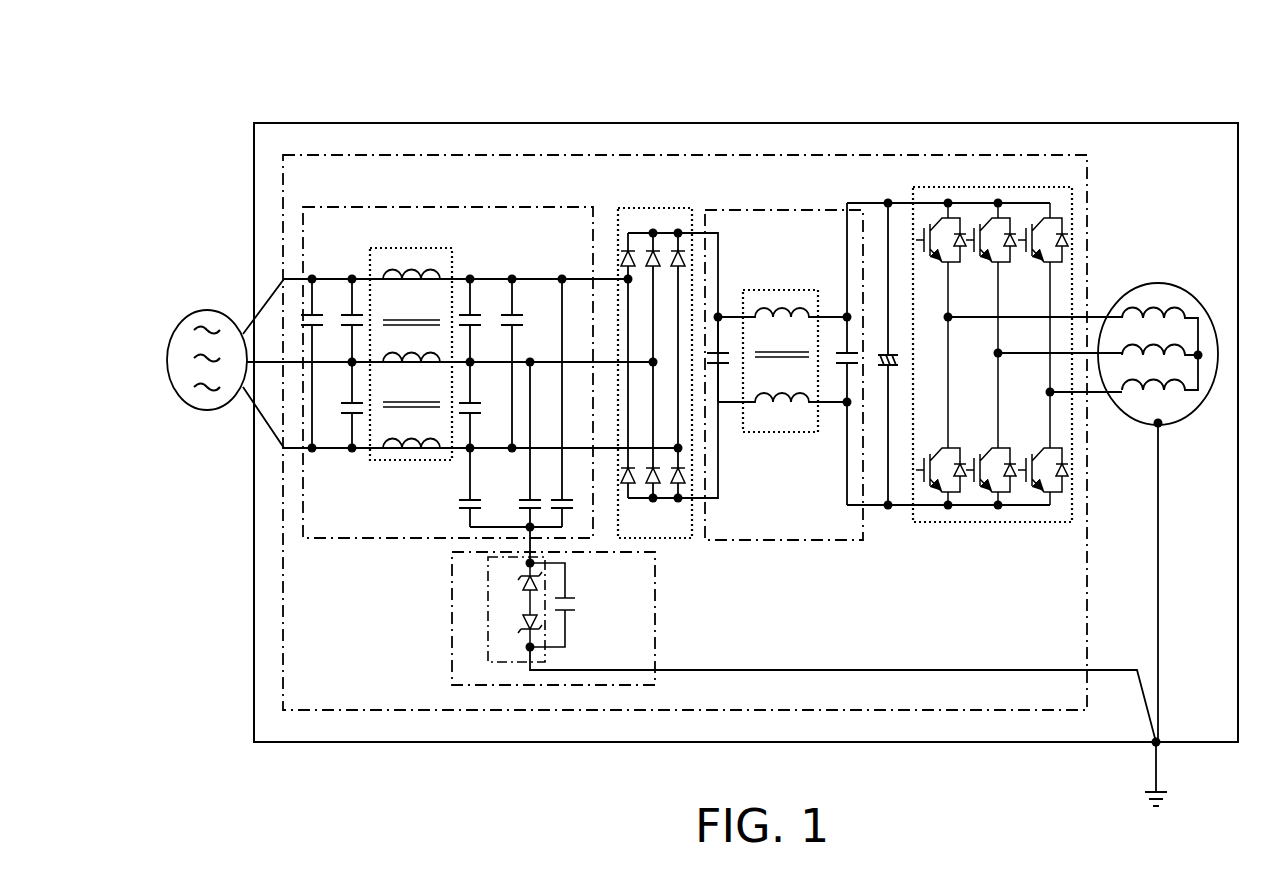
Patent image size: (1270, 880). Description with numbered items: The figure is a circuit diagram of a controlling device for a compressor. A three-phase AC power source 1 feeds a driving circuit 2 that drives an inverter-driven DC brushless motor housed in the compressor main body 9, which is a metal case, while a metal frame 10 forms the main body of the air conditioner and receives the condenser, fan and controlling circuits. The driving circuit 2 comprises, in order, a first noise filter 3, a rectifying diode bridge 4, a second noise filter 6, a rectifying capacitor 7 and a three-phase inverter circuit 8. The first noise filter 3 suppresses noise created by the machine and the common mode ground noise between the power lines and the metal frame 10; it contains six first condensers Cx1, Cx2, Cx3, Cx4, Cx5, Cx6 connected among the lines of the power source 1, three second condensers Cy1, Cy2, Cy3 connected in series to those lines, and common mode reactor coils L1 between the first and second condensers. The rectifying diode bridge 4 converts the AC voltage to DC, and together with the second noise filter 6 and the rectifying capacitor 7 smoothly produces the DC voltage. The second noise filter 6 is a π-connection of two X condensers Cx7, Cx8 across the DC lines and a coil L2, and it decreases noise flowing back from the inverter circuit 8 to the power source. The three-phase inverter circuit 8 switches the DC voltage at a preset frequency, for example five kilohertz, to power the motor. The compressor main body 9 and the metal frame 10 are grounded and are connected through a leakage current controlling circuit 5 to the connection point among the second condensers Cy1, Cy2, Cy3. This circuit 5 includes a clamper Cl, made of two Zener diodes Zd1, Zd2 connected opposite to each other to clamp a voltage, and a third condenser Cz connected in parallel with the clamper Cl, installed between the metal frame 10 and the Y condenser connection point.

The three-phase AC power source 1 is at (178, 303).
The driving circuit 2 is at (343, 150).
The first noise filter 3 is at (445, 205).
The rectifying diode bridge 4 is at (673, 205).
The leakage current controlling circuit 5 is at (515, 677).
The second noise filter 6 is at (784, 308).
The rectifying capacitor 7 is at (875, 345).
The three-phase inverter circuit 8 is at (995, 185).
The compressor main body 9 is at (1160, 283).
The metal frame 10 is at (1140, 123).
The first condenser Cx1 is at (318, 318).
The first condenser Cx2 is at (358, 318).
The first condenser Cx3 is at (348, 448).
The first condenser Cx4 is at (476, 318).
The first condenser Cx5 is at (518, 318).
The first condenser Cx6 is at (481, 405).
The X condenser Cx7 is at (722, 355).
The X condenser Cx8 is at (839, 355).
The second condenser Cy1 is at (461, 487).
The second condenser Cy2 is at (518, 444).
The second condenser Cy3 is at (570, 403).
The common mode reactor coil L1 is at (411, 340).
The coil L2 is at (782, 346).
The Zener diode Zd1 is at (520, 590).
The Zener diode Zd2 is at (520, 625).
The third condenser Cz is at (566, 605).
The clamper Cl is at (545, 680).